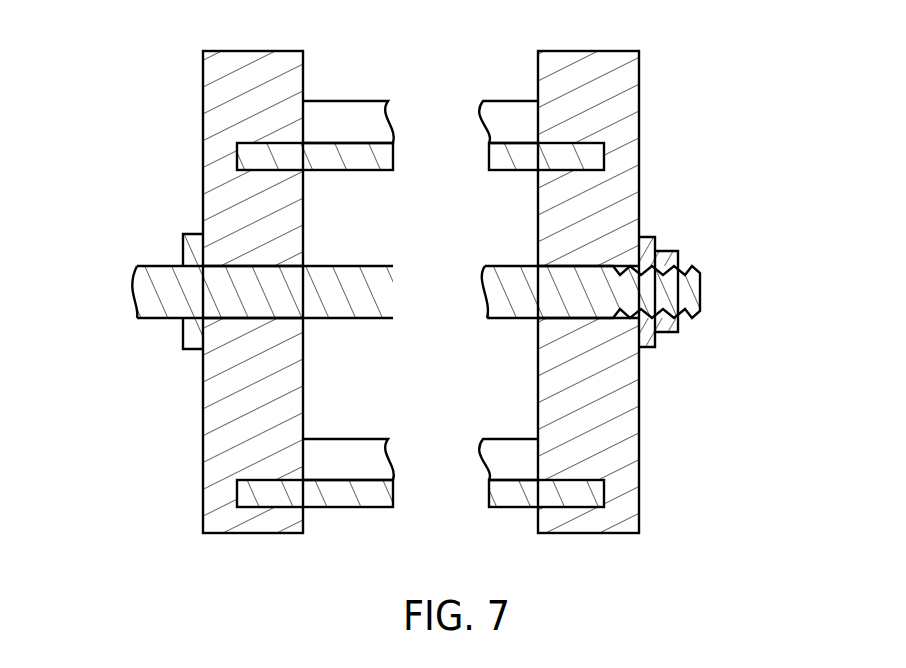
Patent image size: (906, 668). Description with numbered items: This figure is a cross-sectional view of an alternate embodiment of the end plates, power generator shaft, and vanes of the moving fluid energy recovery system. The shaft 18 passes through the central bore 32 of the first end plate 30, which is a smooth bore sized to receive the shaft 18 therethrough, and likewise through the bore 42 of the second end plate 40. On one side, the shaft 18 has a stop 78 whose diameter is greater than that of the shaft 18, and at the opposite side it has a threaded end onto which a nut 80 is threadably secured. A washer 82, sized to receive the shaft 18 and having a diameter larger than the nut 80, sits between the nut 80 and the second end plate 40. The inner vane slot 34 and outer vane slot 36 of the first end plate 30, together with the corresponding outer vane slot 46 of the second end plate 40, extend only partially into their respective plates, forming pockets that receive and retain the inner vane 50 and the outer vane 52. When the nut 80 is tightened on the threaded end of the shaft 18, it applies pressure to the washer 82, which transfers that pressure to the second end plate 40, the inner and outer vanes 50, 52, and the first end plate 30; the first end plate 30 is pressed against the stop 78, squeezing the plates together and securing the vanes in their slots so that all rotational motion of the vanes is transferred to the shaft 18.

The shaft 18 is at (135, 292).
The first end plate 30 is at (203, 70).
The central bore 32 is at (303, 318).
The inner vane slot 34 is at (303, 170).
The outer vane slot 36 is at (305, 508).
The second end plate 40 is at (639, 51).
The bore of second member 42 is at (538, 318).
The outer vane slot 46 is at (538, 171).
The inner vane 50 is at (505, 101).
The outer vane 52 is at (505, 439).
The stop 78 is at (183, 234).
The nut 80 is at (668, 251).
The washer 82 is at (655, 237).